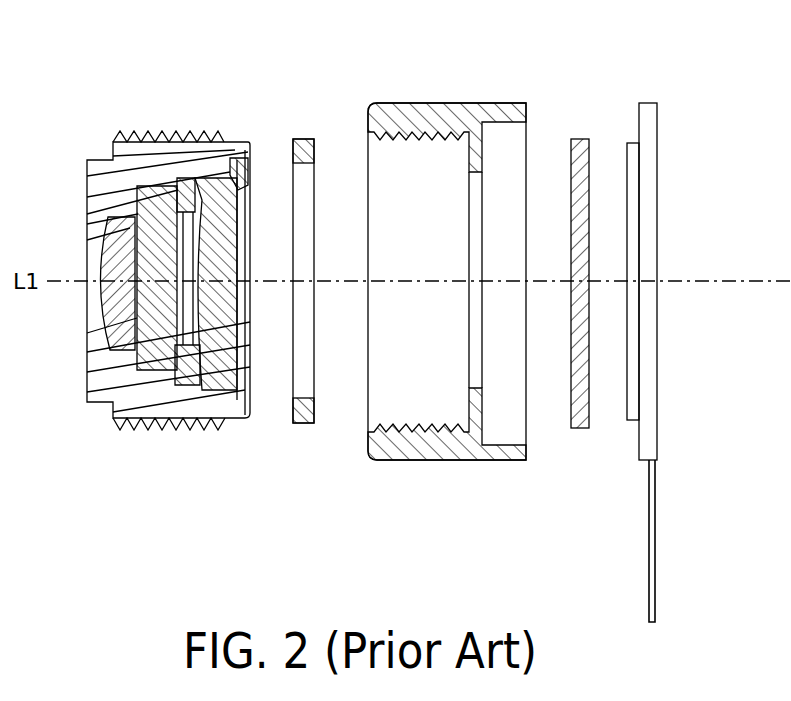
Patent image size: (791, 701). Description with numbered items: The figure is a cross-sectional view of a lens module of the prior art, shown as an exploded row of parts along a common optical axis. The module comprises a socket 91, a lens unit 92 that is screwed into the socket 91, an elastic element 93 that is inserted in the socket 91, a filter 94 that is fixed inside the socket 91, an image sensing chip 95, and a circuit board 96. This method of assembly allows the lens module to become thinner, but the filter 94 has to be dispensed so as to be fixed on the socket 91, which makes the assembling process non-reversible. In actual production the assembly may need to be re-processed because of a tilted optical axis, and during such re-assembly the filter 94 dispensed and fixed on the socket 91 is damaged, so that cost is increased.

The socket 91 is at (462, 103).
The lens unit 92 is at (112, 149).
The elastic element 93 is at (305, 138).
The filter 94 is at (577, 138).
The image sensing chip 95 is at (652, 186).
The circuit board 96 is at (630, 337).